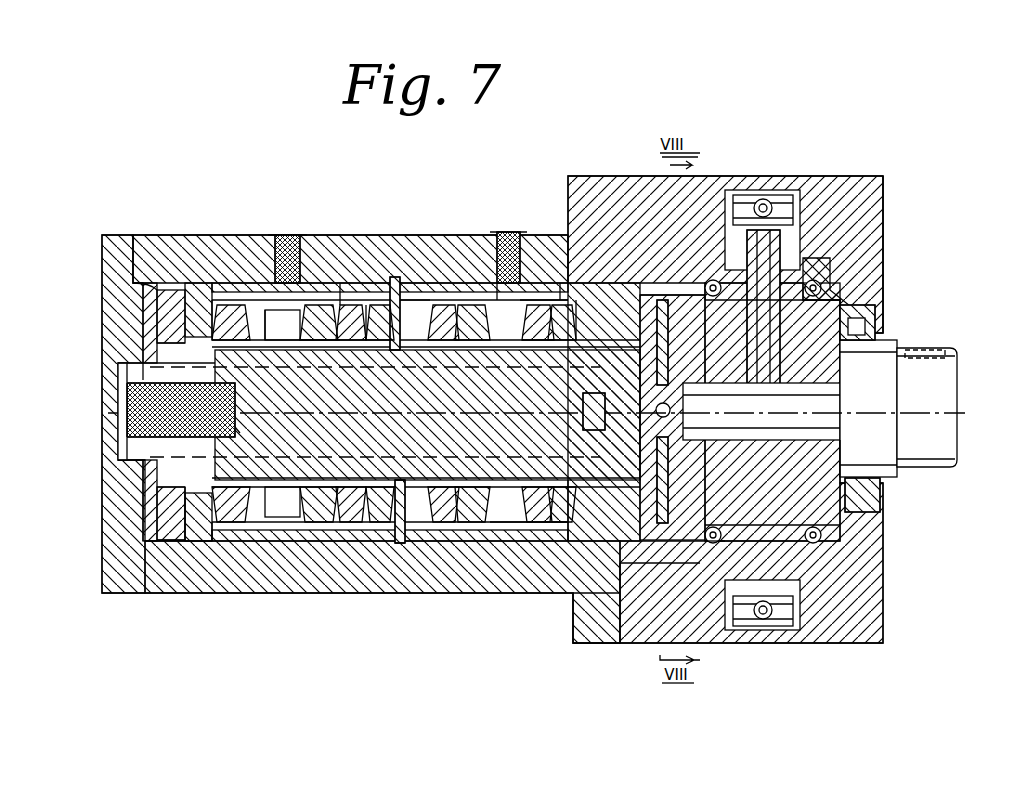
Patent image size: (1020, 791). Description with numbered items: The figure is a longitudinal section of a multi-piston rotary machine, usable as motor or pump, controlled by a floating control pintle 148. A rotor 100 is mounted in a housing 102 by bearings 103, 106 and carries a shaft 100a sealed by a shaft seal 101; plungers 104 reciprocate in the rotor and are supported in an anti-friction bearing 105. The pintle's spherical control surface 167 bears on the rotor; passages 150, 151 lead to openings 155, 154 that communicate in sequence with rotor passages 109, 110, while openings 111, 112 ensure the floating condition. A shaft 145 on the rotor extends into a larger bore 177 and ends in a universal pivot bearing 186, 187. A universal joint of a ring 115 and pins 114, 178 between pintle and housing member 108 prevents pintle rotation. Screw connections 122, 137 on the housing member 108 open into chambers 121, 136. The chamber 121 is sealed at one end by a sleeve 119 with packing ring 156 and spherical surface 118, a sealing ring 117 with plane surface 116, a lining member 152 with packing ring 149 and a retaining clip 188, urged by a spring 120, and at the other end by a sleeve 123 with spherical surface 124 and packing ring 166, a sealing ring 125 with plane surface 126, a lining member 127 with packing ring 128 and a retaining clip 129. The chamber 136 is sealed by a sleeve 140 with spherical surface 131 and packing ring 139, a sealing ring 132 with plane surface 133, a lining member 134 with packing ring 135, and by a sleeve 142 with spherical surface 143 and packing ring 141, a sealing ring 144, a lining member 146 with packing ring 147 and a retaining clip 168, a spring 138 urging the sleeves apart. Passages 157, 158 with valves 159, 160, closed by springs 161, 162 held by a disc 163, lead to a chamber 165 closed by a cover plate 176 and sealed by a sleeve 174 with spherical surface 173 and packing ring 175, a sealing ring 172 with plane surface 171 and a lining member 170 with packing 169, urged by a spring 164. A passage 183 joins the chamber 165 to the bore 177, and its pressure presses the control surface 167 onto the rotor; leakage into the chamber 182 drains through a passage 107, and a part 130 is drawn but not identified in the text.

The rotor 100 is at (900, 362).
The shaft 100a is at (948, 360).
The shaft seal 101 is at (866, 330).
The housing 102 is at (845, 212).
The bearing 103 is at (868, 232).
The plunger 104 is at (790, 250).
The anti-friction bearing 105 is at (760, 625).
The bearing 106 is at (735, 262).
The passage 107 is at (288, 285).
The housing member 108 is at (622, 605).
The passage 109 is at (872, 315).
The passage 110 is at (850, 492).
The opening 111 is at (738, 602).
The opening 112 is at (758, 300).
The pin 114 is at (700, 262).
The ring 115 is at (700, 562).
The plane surface 116 is at (580, 300).
The sealing ring 117 is at (572, 300).
The spherical surface 118 is at (563, 280).
The sealing sleeve 119 is at (540, 330).
The spring 120 is at (505, 522).
The chamber 121 is at (505, 300).
The screw connection 122 is at (470, 330).
The sealing sleeve 123 is at (500, 240).
The spherical surface 124 is at (445, 330).
The sealing ring 125 is at (425, 300).
The plane surface 126 is at (400, 300).
The lining member 127 is at (385, 300).
The packing ring 128 is at (425, 500).
The retaining clip 129 is at (400, 500).
The bearing 130 is at (452, 522).
The spherical surface 131 is at (300, 320).
The sealing ring 132 is at (335, 340).
The plane surface 133 is at (355, 300).
The lining member 134 is at (365, 300).
The packing ring 135 is at (396, 543).
The chamber 136 is at (235, 300).
The screw connection 137 is at (285, 240).
The spring 138 is at (212, 505).
The packing ring 139 is at (242, 522).
The sleeve 140 is at (255, 302).
The packing ring 141 is at (185, 522).
The sleeve 142 is at (212, 300).
The spherical surface 143 is at (200, 283).
The sealing ring 144 is at (185, 298).
The shaft 145 is at (600, 300).
The lining member 146 is at (150, 300).
The packing ring 147 is at (172, 560).
The control pintle 148 is at (492, 522).
The packing ring 149 is at (642, 622).
The passage 150 is at (540, 300).
The passage 151 is at (600, 582).
The lining member 152 is at (642, 320).
The opening 154 is at (719, 501).
The opening 155 is at (832, 302).
The packing ring 156 is at (562, 482).
The passage 157 is at (330, 522).
The passage 158 is at (290, 522).
The valve 159 is at (235, 395).
The valve 160 is at (236, 433).
The spring 161 is at (123, 430).
The spring 162 is at (130, 445).
The disc 163 is at (124, 400).
The spring 164 is at (150, 480).
The chamber 165 is at (118, 380).
The packing ring 166 is at (540, 522).
The control surface 167 is at (822, 428).
The retaining clip 168 is at (150, 522).
The packing 169 is at (117, 560).
The lining member 170 is at (130, 292).
The plane surface 171 is at (135, 375).
The sealing ring 172 is at (150, 380).
The spherical surface 173 is at (165, 345).
The sealing sleeve 174 is at (155, 500).
The packing ring 175 is at (140, 463).
The cover plate 176 is at (115, 555).
The bore 177 is at (723, 419).
The pin 178 is at (800, 402).
The chamber 182 is at (150, 300).
The passage 183 is at (470, 500).
The universal pivot bearing 186 is at (660, 586).
The universal pivot bearing 187 is at (590, 393).
The retaining clip 188 is at (665, 252).